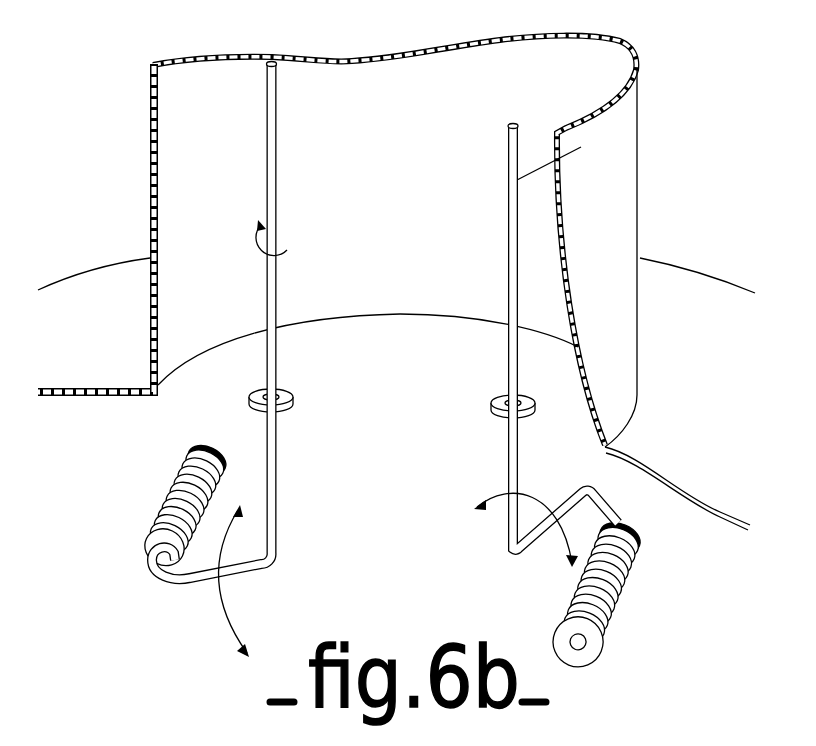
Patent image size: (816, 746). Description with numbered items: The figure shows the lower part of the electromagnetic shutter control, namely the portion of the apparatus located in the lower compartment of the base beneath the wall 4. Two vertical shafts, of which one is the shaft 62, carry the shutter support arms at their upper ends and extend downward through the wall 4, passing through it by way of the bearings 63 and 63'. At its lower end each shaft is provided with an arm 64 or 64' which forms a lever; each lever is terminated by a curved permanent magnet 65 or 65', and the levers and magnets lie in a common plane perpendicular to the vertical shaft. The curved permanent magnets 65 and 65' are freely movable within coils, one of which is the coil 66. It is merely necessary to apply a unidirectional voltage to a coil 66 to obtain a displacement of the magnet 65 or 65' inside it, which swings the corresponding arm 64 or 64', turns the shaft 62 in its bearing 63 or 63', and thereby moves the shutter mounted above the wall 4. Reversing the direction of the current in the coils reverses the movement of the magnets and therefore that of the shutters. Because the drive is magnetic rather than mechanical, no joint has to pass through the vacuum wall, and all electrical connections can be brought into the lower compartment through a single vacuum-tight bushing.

The wall 4 is at (369, 373).
The vertical shaft 62 is at (271, 153).
The bearing 63 is at (234, 355).
The bearing 63' is at (590, 393).
The arm 64 is at (195, 590).
The arm 64' is at (568, 546).
The curved permanent magnet 65 is at (131, 568).
The curved permanent magnet 65' is at (651, 493).
The coil 66 is at (170, 502).